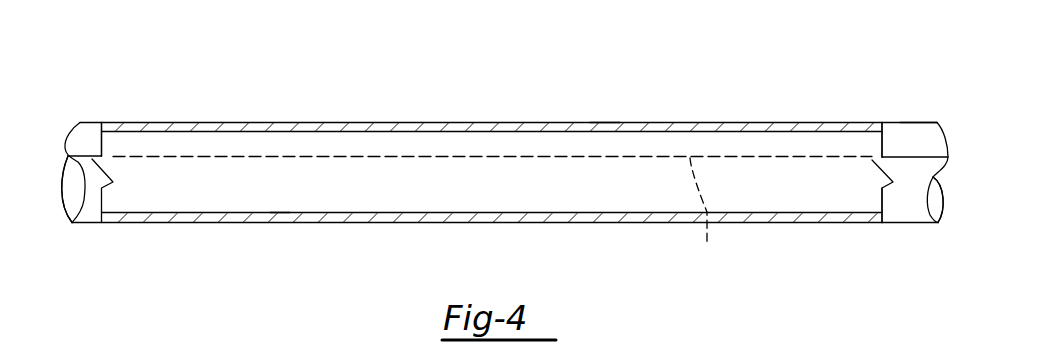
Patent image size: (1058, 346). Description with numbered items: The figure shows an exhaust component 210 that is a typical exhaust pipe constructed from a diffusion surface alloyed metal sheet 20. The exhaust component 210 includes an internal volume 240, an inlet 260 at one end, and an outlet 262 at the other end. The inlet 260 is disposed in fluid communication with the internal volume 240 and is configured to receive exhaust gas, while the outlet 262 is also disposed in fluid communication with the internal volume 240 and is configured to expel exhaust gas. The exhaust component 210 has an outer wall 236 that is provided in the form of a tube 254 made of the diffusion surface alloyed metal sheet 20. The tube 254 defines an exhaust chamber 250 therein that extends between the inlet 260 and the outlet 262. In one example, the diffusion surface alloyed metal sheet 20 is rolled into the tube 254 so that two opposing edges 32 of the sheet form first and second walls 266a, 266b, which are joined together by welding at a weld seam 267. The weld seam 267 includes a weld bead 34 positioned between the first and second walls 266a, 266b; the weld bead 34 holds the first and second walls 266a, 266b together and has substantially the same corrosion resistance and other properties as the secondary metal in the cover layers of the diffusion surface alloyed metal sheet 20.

The exhaust component 210 is at (82, 102).
The diffusion surface alloyed metal sheet 20 is at (288, 128).
The opposing edges 32 is at (398, 152).
The weld bead 34 is at (85, 156).
The outer wall 236 is at (607, 120).
The internal volume 240 is at (280, 186).
The exhaust chamber 250 is at (515, 197).
The weld seam 267 is at (715, 214).
The first wall 266a is at (902, 137).
The second wall 266b is at (900, 212).
The tube 254 is at (912, 120).
The inlet 260 is at (78, 202).
The outlet 262 is at (934, 203).